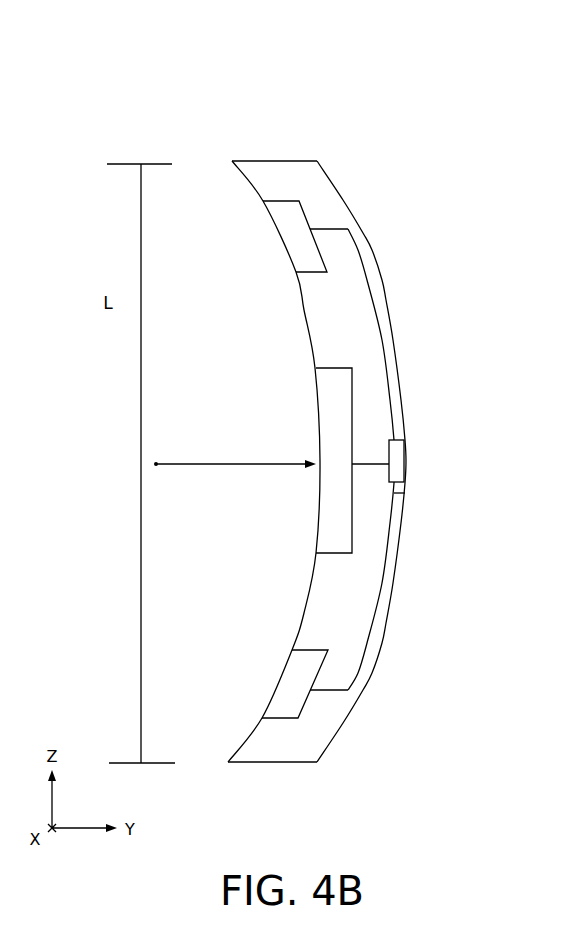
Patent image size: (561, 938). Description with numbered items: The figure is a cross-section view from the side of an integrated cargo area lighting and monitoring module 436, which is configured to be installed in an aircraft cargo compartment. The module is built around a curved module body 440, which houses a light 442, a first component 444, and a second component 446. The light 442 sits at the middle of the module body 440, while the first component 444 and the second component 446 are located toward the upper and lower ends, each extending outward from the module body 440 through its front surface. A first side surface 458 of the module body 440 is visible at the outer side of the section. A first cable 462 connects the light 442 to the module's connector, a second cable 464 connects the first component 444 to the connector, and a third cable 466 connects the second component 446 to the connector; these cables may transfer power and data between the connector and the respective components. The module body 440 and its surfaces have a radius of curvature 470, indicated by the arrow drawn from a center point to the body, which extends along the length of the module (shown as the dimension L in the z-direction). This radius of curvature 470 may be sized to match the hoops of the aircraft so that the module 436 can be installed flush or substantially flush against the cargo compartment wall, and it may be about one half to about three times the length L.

The integrated cargo area lighting and monitoring module 436 is at (182, 118).
The module body 440 is at (458, 200).
The light 442 is at (333, 500).
The first component 444 is at (285, 229).
The second component 446 is at (303, 673).
The first side surface 458 is at (395, 462).
The first cable 462 is at (370, 465).
The second cable 464 is at (367, 280).
The third cable 466 is at (365, 640).
The radius of curvature 470 is at (203, 462).